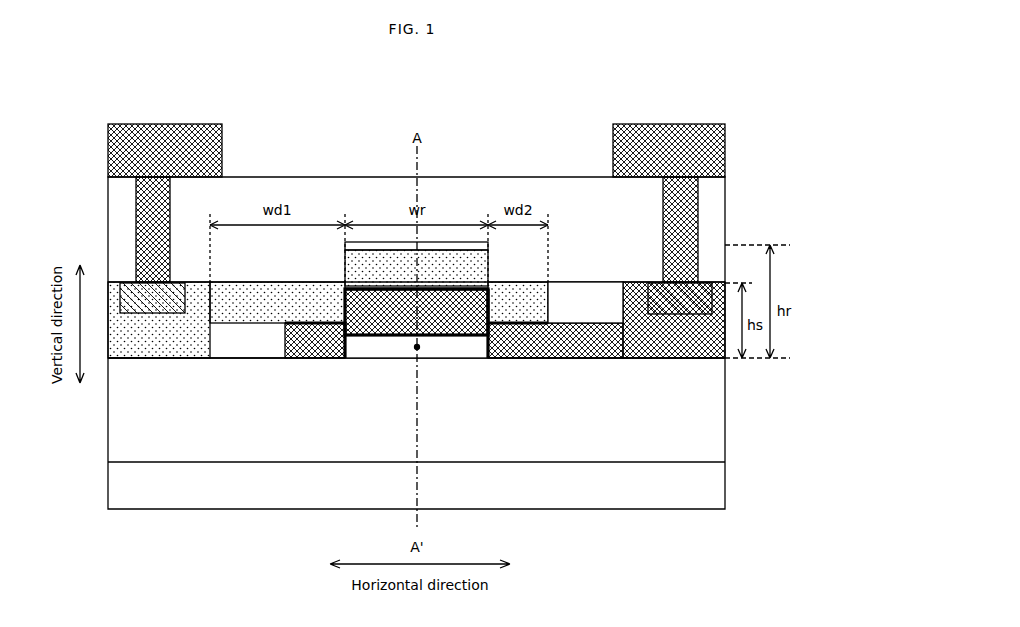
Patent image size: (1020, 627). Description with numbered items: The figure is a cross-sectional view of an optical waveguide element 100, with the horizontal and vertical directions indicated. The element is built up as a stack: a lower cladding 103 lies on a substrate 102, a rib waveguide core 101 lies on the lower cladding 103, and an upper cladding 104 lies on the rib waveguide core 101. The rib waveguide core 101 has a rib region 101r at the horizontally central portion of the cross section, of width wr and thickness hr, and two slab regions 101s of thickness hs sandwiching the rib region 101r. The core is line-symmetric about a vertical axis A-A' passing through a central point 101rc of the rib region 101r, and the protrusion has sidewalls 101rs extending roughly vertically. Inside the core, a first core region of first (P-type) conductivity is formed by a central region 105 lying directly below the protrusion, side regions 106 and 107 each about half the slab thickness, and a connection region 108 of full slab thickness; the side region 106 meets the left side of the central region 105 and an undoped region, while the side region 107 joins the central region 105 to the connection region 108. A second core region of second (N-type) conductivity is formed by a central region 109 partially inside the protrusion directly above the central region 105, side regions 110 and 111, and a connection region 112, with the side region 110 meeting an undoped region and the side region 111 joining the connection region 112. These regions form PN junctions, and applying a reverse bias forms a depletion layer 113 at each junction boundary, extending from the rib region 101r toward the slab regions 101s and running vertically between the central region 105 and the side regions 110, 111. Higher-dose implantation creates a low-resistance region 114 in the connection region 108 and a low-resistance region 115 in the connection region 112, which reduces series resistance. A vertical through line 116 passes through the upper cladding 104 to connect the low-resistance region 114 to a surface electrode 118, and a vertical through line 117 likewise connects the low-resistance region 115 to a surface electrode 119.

The optical waveguide element 100 is at (668, 106).
The rib waveguide core 101 is at (588, 284).
The slab regions 101s is at (162, 365).
The rib region 101r is at (455, 366).
The central point of the rib region 101rc is at (415, 351).
The sidewalls 101rs is at (490, 270).
The substrate 102 is at (416, 479).
The lower cladding 103 is at (416, 390).
The upper cladding 104 is at (416, 236).
The central region 105 is at (416, 312).
The side region 106 is at (315, 340).
The side region 107 is at (555, 340).
The connection region 108 is at (674, 320).
The central region 109 is at (416, 268).
The side region 110 is at (518, 302).
The side region 111 is at (277, 302).
The connection region 112 is at (159, 320).
The depletion layer 113 is at (284, 325).
The low-resistance region 114 is at (680, 298).
The low-resistance region 115 is at (152, 298).
The vertical through line 116 is at (680, 229).
The vertical through line 117 is at (153, 229).
The surface electrode 118 is at (669, 150).
The surface electrode 119 is at (165, 150).